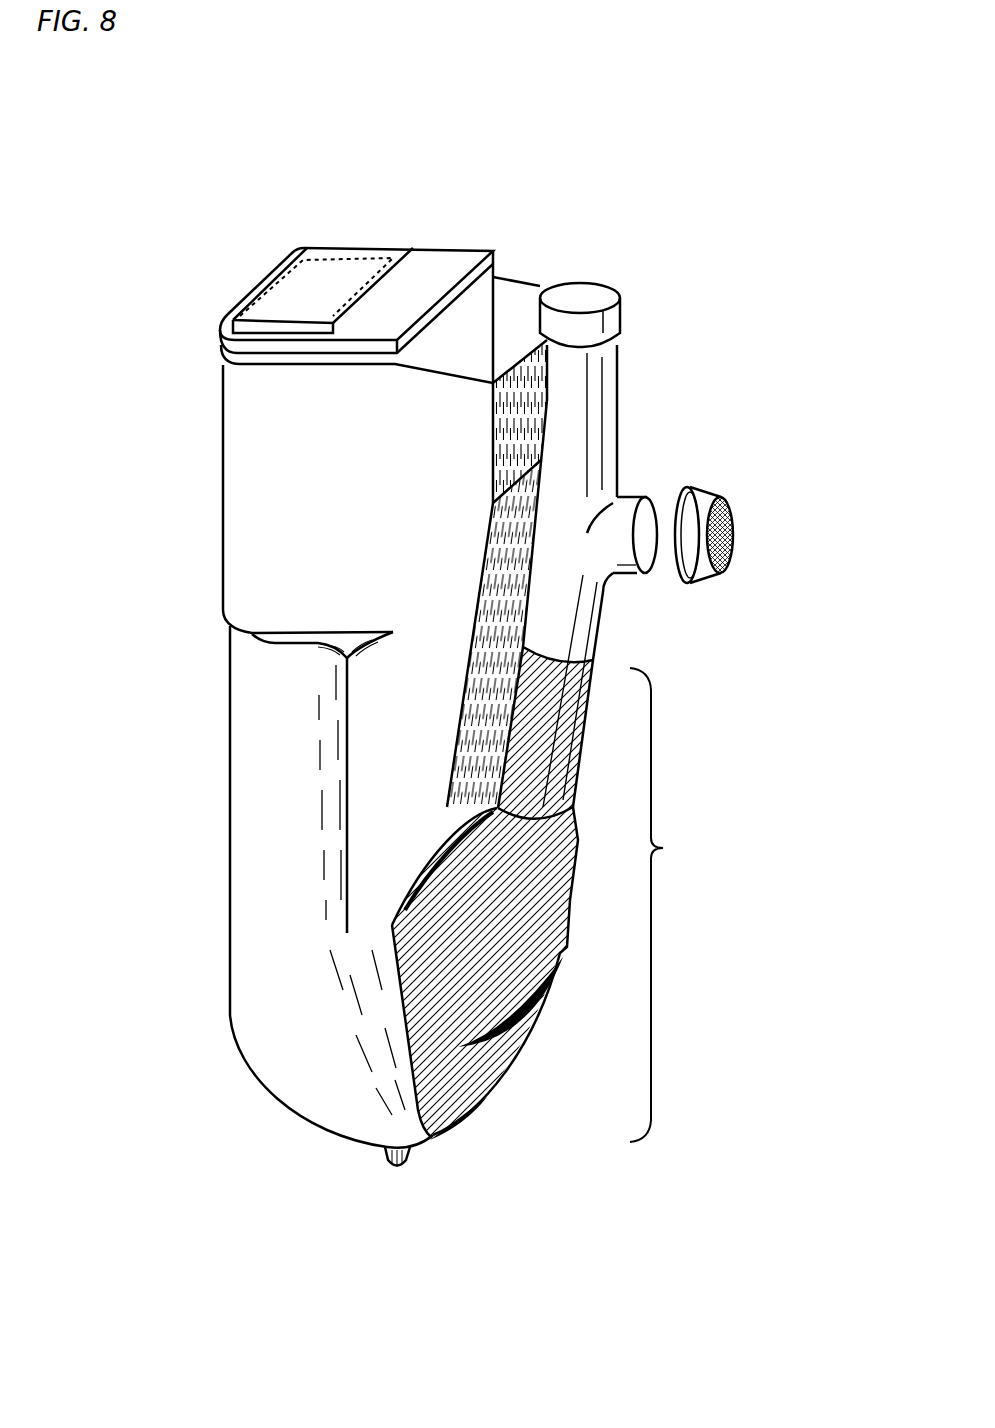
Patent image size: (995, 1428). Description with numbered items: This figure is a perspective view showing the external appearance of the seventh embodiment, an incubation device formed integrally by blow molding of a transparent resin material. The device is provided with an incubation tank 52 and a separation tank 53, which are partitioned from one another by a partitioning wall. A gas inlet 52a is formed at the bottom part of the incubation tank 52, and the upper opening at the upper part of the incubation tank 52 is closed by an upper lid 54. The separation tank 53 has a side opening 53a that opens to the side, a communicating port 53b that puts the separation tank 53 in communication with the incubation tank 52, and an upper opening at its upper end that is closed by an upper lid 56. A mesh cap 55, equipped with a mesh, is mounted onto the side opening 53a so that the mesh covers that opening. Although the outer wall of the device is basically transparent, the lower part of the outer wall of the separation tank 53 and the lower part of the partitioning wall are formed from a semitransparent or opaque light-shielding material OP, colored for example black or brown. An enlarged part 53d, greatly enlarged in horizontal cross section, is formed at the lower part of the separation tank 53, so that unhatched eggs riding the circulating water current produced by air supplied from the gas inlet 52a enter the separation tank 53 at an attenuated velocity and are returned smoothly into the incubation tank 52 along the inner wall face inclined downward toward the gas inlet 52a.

The incubation tank 52 is at (265, 803).
The gas inlet 52a is at (398, 1167).
The separation tank 53 is at (553, 693).
The side opening 53a is at (658, 528).
The communicating port 53b is at (415, 1113).
The enlarged part 53d is at (473, 933).
The upper lid 54 is at (448, 248).
The mesh cap 55 is at (708, 488).
The upper lid 56 is at (580, 283).
The light-shielding material OP is at (669, 905).